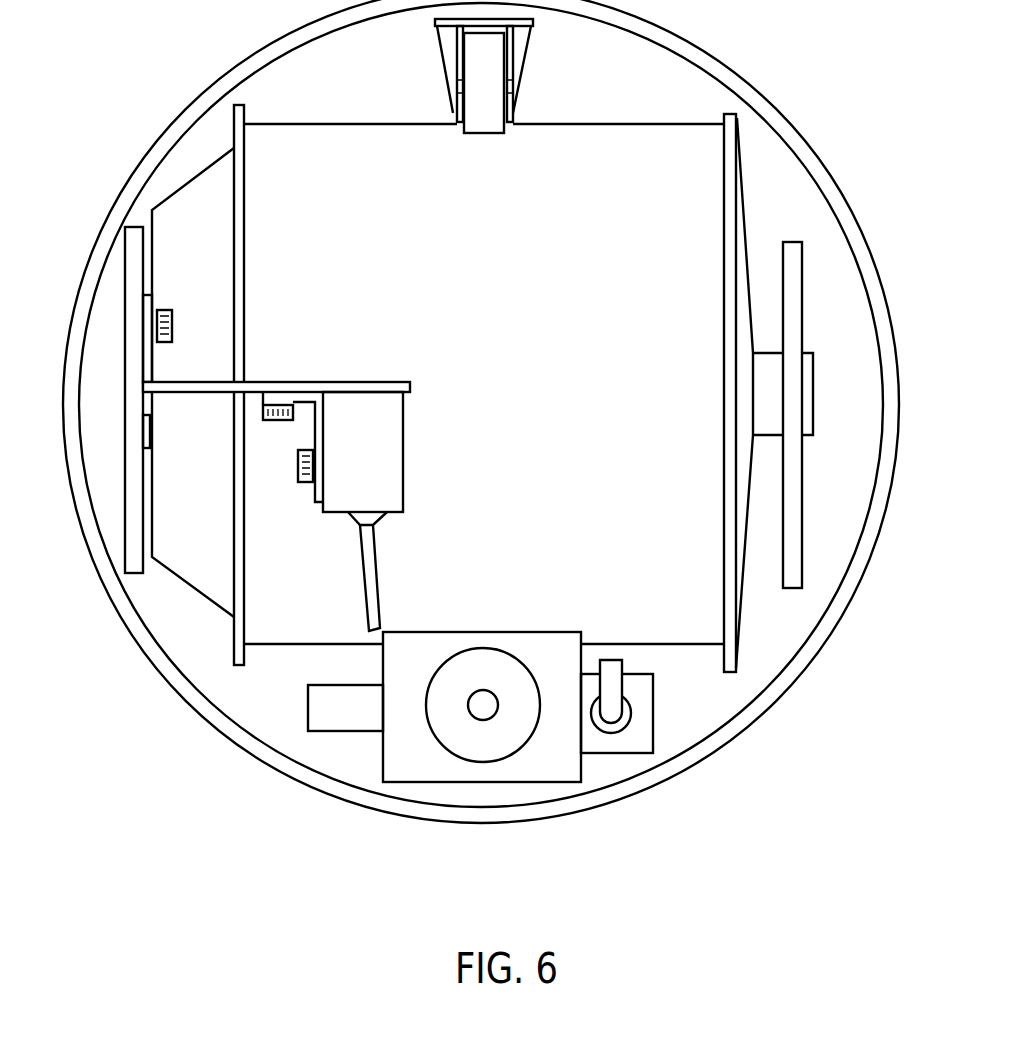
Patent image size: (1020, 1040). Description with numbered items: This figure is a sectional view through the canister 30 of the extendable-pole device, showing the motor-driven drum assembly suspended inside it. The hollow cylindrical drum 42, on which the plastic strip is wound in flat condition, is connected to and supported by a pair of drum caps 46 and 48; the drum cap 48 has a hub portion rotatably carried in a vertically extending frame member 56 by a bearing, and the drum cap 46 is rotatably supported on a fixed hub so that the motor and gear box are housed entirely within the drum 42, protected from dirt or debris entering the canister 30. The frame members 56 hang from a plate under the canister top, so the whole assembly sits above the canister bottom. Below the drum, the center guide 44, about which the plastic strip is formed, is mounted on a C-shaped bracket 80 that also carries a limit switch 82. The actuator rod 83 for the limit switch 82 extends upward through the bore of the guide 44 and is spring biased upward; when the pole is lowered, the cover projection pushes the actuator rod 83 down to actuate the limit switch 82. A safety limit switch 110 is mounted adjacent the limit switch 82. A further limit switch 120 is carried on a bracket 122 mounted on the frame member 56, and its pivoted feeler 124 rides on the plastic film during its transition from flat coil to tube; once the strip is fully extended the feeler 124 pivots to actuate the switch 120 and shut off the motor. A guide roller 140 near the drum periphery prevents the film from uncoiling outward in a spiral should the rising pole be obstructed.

The canister 30 is at (233, 85).
The hollow cylindrical drum 42 is at (373, 158).
The center guide 44 is at (518, 682).
The drum cap 46 is at (192, 200).
The drum cap 48 is at (737, 213).
The frame member 56 is at (132, 257).
The C-shaped bracket 80 is at (555, 761).
The limit switch 82 is at (333, 717).
The actuator rod 83 is at (484, 706).
The safety limit switch 110 is at (643, 705).
The limit switch 120 is at (393, 457).
The bracket 122 is at (193, 389).
The pivoted feeler 124 is at (370, 566).
The guide roller 140 is at (492, 98).